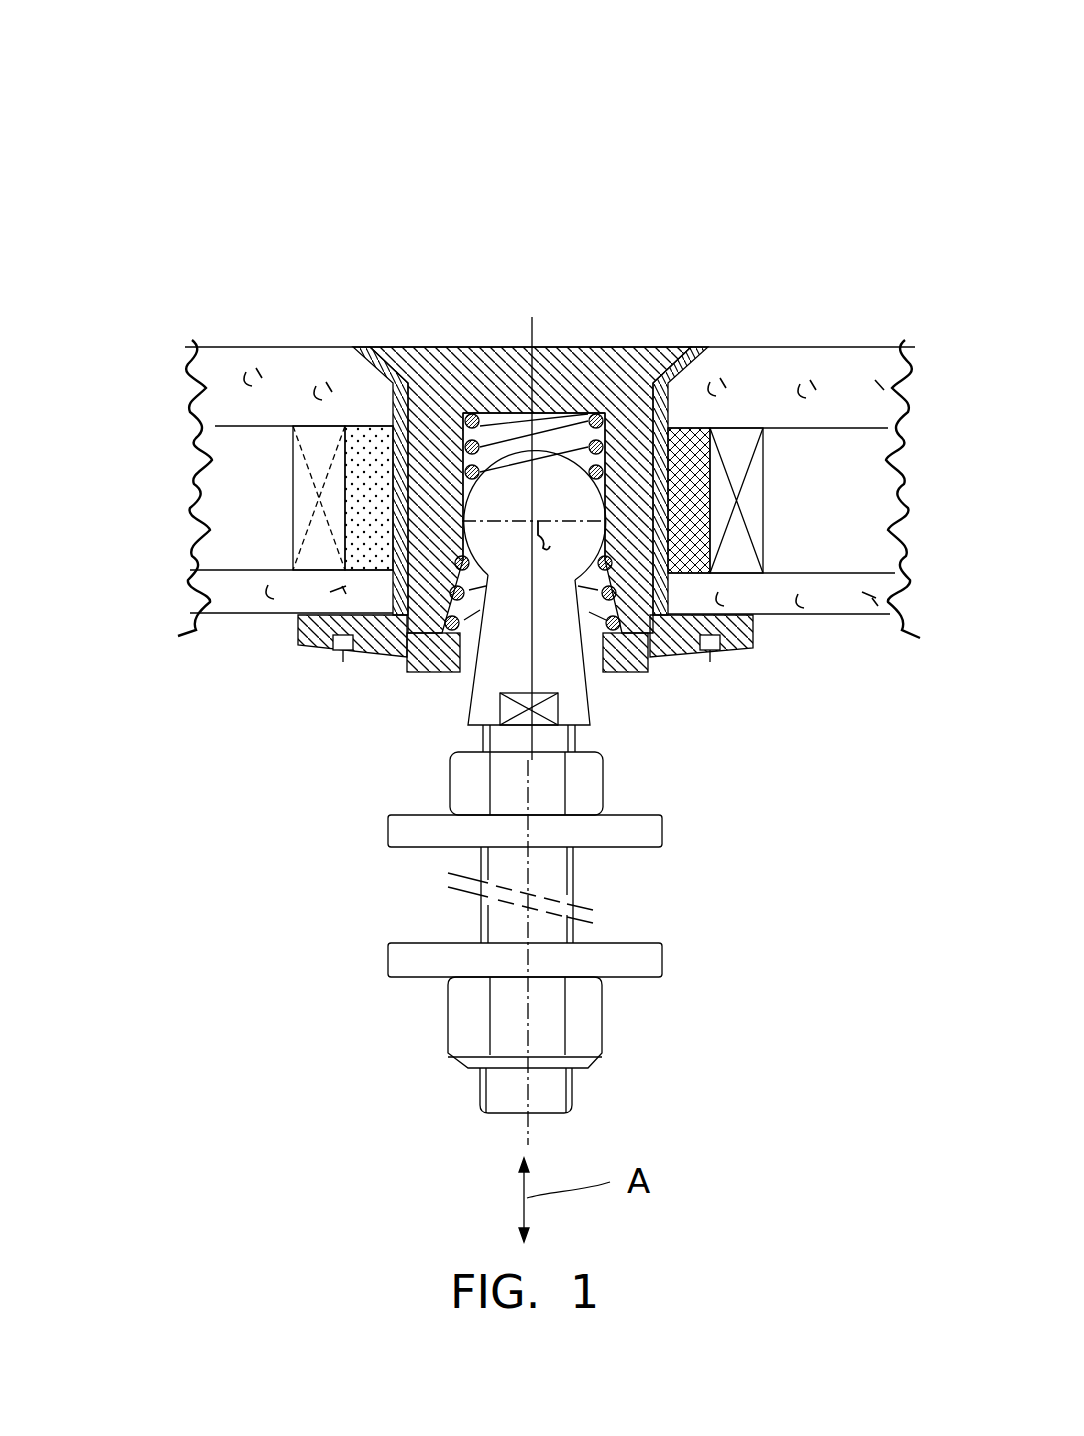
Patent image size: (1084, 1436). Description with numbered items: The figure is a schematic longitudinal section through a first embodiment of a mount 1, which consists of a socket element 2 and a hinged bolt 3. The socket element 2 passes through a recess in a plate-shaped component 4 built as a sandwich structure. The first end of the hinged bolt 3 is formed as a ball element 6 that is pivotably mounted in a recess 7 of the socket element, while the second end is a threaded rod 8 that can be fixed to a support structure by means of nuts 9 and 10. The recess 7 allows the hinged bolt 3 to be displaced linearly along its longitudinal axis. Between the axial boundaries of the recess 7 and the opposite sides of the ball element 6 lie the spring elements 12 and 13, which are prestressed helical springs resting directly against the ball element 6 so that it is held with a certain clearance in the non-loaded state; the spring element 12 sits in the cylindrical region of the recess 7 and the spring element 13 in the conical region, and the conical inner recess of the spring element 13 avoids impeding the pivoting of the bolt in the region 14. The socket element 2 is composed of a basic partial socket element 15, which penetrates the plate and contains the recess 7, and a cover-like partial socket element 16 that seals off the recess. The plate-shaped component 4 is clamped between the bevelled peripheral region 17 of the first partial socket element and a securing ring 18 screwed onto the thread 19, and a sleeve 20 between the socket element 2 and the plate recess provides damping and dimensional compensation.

The mount 1 is at (672, 150).
The socket element 2 is at (495, 282).
The hinged bolt 3 is at (278, 918).
The plate-shaped component 4 is at (770, 377).
The ball element 6 is at (543, 467).
The recess 7 is at (498, 456).
The threaded rod 8 is at (548, 937).
The nut 9 is at (592, 785).
The nut 10 is at (590, 1022).
The spring element 12 is at (578, 425).
The spring element 13 is at (462, 622).
The region of the hinged bolt 14 is at (575, 660).
The partial socket element 15 is at (463, 360).
The partial socket element 16 is at (605, 672).
The bevelled peripheral region 17 is at (401, 360).
The securing ring 18 is at (305, 645).
The thread 19 is at (662, 670).
The sleeve 20 is at (685, 355).